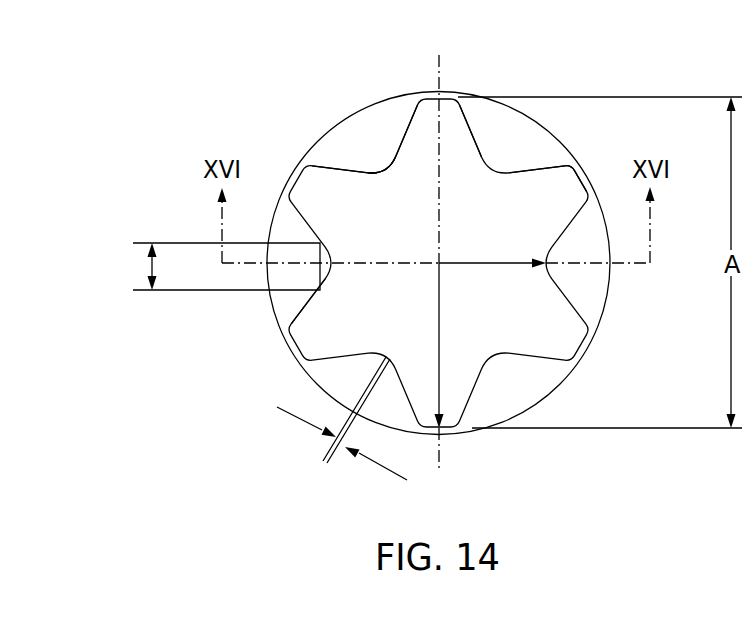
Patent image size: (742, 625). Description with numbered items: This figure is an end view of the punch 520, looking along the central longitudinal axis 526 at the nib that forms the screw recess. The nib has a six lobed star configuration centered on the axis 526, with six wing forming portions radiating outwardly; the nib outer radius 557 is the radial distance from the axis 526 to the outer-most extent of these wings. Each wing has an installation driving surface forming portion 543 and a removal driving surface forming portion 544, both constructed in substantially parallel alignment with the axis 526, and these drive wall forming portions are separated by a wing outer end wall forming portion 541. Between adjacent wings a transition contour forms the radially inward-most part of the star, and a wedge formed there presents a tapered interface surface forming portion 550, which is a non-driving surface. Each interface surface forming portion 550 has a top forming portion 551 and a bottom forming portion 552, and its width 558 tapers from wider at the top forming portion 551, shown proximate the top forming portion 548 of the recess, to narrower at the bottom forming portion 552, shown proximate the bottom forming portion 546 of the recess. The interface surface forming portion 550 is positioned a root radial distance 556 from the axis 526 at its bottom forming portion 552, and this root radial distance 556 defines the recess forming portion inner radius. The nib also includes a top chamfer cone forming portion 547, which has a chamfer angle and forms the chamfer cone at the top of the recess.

The punch 520 is at (292, 133).
The axis 526 is at (447, 268).
The wing outer end wall forming portion 541 is at (445, 97).
The installation driving surface forming portion 543 is at (407, 112).
The removal driving surface forming portion 544 is at (481, 106).
The bottom forming portion of the recess 546 is at (410, 242).
The top chamfer cone forming portion 547 is at (517, 135).
The top forming portion of the recess 548 is at (565, 143).
The interface surface forming portion 550 is at (366, 140).
The top forming portion of the interface surface 551 is at (367, 170).
The bottom forming portion of the interface surface 552 is at (380, 187).
The root radial distance 556 is at (456, 263).
The nib outer radius 557 is at (442, 348).
The width of the interface surface forming portion 558 is at (150, 267).